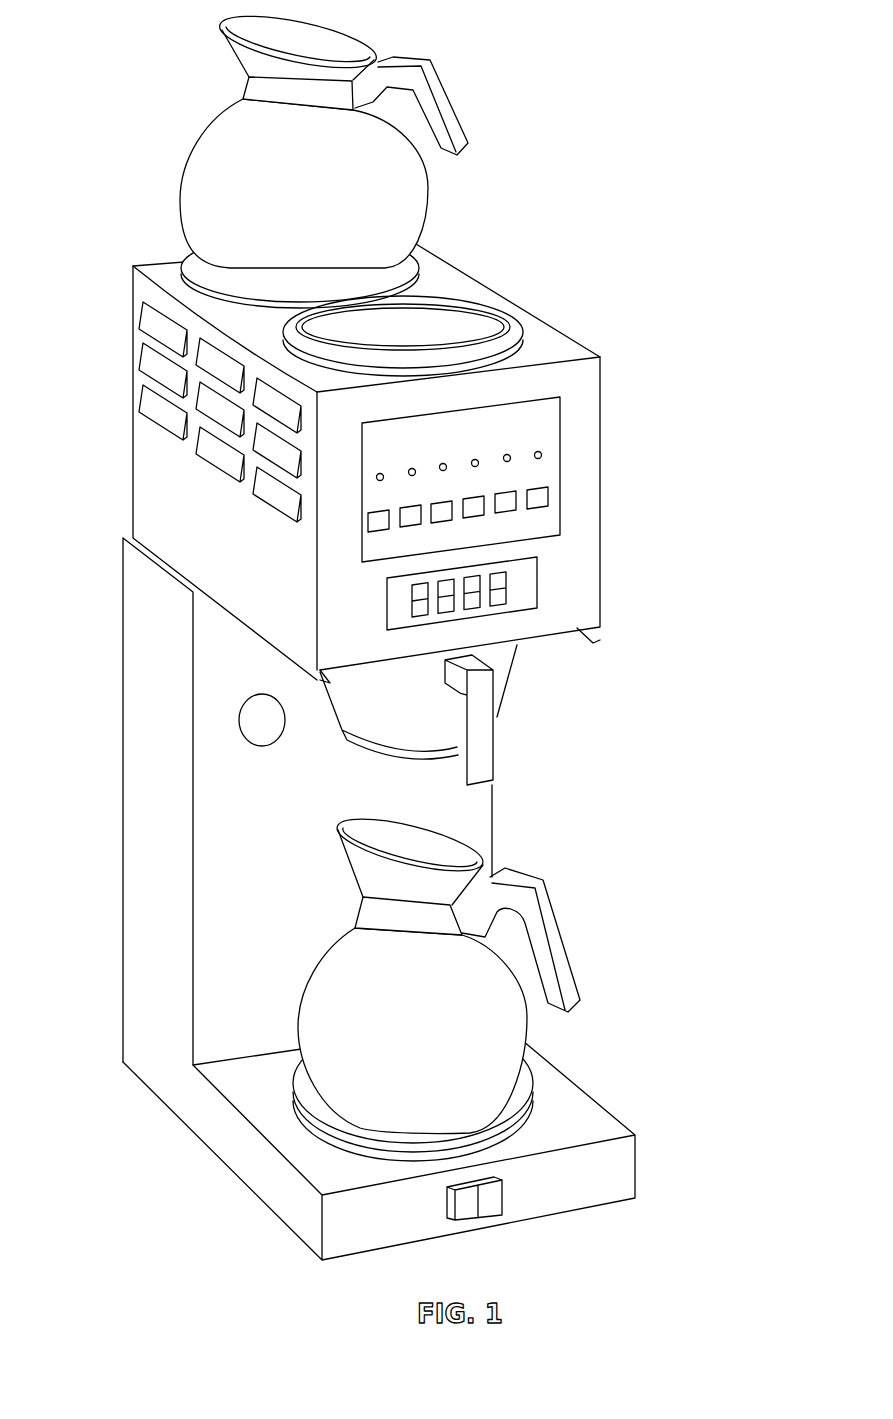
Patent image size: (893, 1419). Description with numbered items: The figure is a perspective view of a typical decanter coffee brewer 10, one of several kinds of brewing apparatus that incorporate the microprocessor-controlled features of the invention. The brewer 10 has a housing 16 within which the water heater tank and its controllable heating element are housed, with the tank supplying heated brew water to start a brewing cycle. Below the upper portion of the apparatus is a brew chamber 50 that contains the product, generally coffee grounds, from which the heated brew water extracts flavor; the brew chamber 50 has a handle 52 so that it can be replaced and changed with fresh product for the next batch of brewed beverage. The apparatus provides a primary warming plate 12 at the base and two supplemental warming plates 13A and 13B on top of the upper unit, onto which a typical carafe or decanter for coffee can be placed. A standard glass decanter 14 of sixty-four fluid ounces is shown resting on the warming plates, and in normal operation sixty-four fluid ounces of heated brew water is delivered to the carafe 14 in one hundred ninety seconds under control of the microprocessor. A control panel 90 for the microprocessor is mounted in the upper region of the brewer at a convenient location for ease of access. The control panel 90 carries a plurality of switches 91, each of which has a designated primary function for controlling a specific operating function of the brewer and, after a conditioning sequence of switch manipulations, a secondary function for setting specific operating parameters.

The decanter coffee brewer 10 is at (427, 735).
The primary warming plate 12 is at (522, 1085).
The supplemental warming plate 13A is at (420, 260).
The supplemental warming plate 13B is at (515, 325).
The decanter 14 is at (218, 162).
The housing 16 is at (155, 812).
The brew chamber 50 is at (380, 708).
The handle 52 is at (483, 747).
The control panel 90 is at (510, 477).
The switches 91 is at (508, 500).